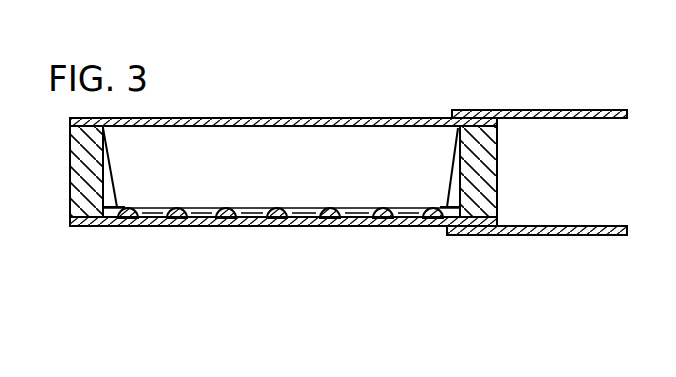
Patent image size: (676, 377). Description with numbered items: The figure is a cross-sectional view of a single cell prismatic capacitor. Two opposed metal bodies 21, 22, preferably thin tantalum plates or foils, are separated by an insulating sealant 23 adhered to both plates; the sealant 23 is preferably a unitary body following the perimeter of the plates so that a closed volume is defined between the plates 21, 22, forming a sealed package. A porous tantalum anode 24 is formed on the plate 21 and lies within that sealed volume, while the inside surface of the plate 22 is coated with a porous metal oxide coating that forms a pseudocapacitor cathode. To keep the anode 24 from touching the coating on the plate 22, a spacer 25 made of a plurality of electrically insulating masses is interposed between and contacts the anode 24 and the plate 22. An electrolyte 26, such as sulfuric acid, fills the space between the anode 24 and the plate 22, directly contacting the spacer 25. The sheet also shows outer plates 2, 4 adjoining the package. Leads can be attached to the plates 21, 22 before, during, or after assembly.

The lower substrate plate 2 is at (568, 235).
The upper substrate plate 4 is at (557, 110).
The metal body 21 is at (383, 120).
The metal body 22 is at (408, 227).
The insulating sealant 23 is at (492, 172).
The porous tantalum anode 24 is at (248, 145).
The spacer 25 is at (172, 227).
The electrolyte 26 is at (300, 213).